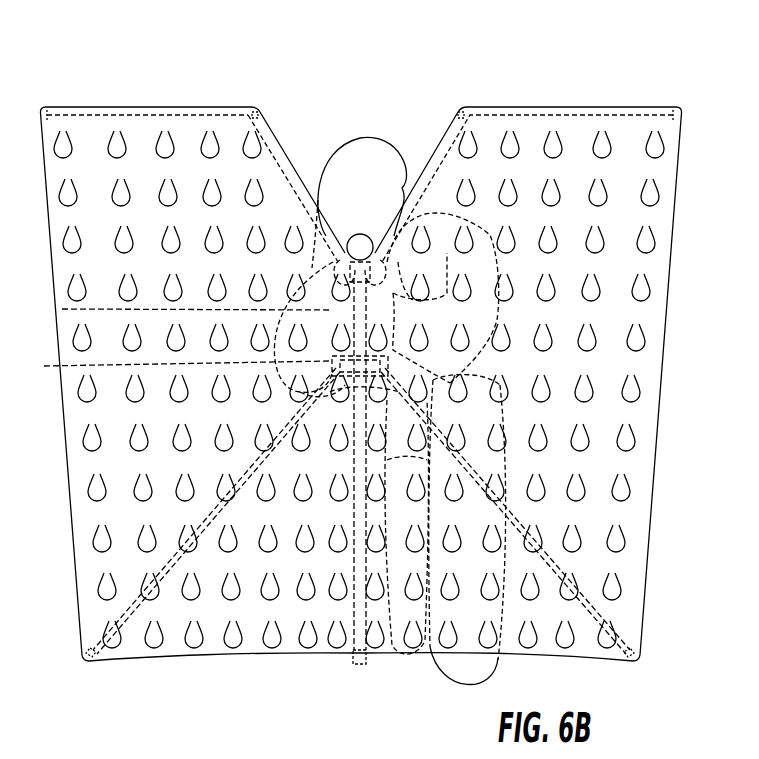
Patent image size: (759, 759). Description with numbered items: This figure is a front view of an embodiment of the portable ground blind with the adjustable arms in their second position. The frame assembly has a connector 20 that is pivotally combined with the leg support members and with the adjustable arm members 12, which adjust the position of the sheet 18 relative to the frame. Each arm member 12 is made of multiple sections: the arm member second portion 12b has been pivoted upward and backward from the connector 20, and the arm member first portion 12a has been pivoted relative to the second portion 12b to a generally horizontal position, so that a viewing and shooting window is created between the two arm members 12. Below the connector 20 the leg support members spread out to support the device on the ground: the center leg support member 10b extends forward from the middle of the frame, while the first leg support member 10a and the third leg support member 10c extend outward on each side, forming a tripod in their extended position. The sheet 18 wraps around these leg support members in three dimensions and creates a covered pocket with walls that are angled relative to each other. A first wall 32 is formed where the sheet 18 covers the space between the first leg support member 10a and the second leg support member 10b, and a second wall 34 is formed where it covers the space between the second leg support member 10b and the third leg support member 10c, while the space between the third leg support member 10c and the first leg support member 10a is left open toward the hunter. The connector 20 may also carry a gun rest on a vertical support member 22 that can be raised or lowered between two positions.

The adjustable arm member 12 is at (197, 103).
The arm member first portion 12a is at (128, 117).
The arm member second portion 12b is at (290, 140).
The sheet 18 is at (668, 311).
The connector 20 is at (172, 371).
The vertical support member 22 is at (62, 309).
The first wall 32 is at (450, 515).
The second wall 34 is at (275, 561).
The first leg support member 10a is at (605, 637).
The second leg support member 10b is at (350, 660).
The third leg support member 10c is at (118, 623).